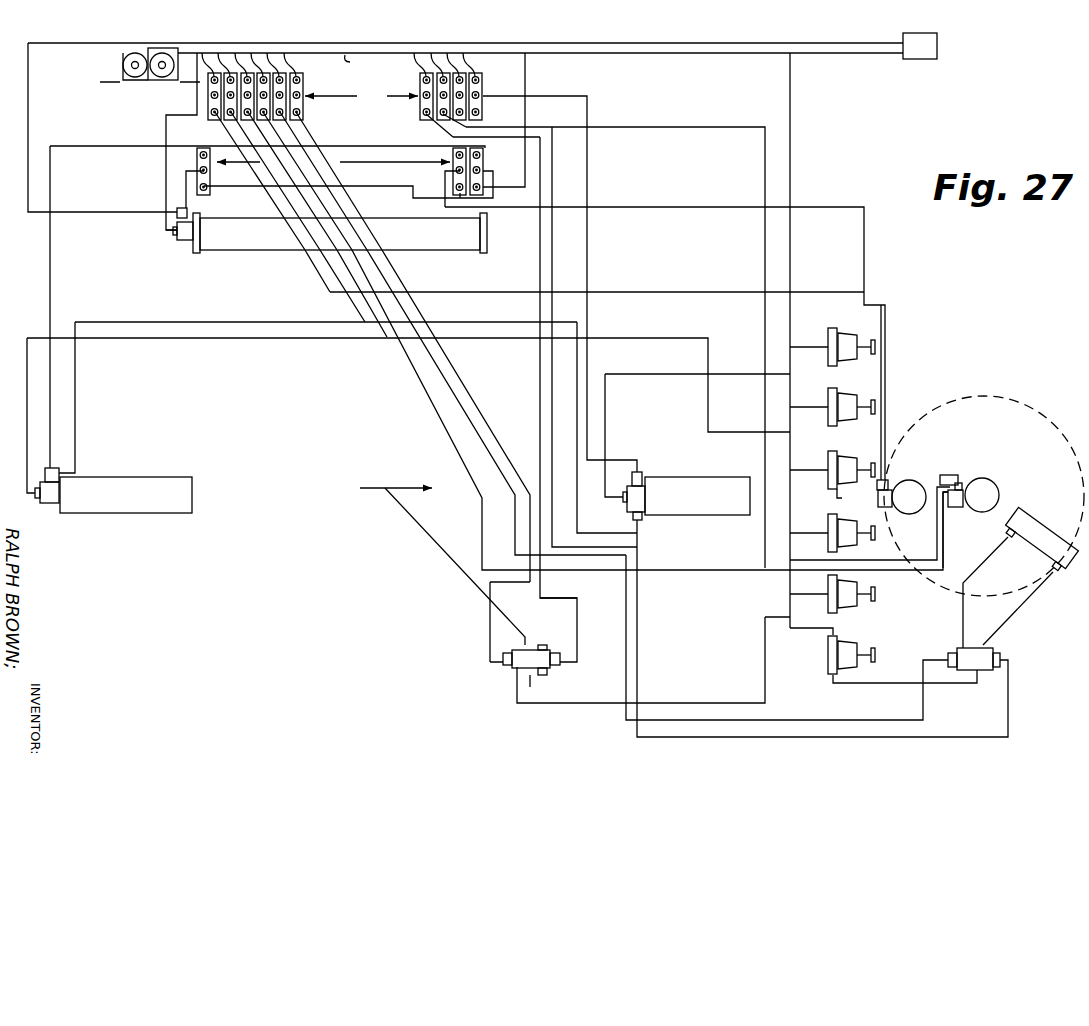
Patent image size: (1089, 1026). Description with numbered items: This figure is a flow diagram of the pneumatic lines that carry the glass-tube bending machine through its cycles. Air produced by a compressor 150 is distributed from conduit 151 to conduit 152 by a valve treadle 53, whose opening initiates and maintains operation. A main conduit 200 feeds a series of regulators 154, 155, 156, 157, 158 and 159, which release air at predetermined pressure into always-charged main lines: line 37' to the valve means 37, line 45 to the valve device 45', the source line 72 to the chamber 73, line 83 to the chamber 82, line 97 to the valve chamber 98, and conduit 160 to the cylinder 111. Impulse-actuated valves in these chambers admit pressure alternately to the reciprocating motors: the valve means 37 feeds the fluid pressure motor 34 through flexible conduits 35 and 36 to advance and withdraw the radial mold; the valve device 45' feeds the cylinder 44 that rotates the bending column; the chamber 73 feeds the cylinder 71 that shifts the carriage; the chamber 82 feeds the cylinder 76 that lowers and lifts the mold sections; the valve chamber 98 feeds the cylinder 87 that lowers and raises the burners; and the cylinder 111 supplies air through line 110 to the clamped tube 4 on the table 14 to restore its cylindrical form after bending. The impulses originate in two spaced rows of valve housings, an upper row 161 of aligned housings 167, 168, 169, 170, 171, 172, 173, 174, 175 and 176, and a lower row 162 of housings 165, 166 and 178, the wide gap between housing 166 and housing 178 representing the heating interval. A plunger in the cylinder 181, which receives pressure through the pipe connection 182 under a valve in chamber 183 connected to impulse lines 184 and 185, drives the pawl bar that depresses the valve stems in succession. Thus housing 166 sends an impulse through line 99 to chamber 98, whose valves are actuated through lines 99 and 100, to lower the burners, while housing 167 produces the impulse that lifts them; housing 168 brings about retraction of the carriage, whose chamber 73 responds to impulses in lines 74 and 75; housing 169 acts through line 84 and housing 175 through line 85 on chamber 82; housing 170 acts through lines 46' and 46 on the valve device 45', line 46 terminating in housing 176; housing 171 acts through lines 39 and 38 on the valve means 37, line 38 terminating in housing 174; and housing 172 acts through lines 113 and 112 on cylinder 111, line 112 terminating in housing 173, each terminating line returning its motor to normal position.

The tube 4 is at (372, 488).
The table 14 is at (978, 396).
The fluid pressure motor 34 is at (1040, 522).
The flexible conduit 35 is at (1020, 608).
The flexible conduit 36 is at (985, 568).
The valve means 37 is at (966, 650).
The line 37' is at (883, 667).
The line 38 is at (1008, 705).
The line 39 is at (923, 703).
The cylinder 44 is at (700, 482).
The line 45 is at (408, 417).
The valve device 45' is at (653, 497).
The line 46 is at (631, 477).
The line 46' is at (607, 427).
The valve treadle 53 is at (937, 48).
The fluid pressure cylinder 71 is at (135, 508).
The fluid pressure source line 72 is at (223, 338).
The chamber 73 is at (48, 505).
The line 74 is at (77, 417).
The line 75 is at (50, 305).
The cylinder 76 is at (990, 487).
The chamber 82 is at (955, 503).
The line 83 is at (948, 543).
The line 84 is at (422, 393).
The line 85 is at (643, 127).
The cylinder 87 is at (909, 482).
The line 97 is at (838, 498).
The valve chamber 98 is at (878, 505).
The line 99 is at (864, 232).
The line 100 is at (840, 280).
The line 110 is at (437, 546).
The cylinder 111 is at (520, 668).
The line 112 is at (577, 622).
The line 113 is at (500, 632).
The compressor 150 is at (165, 74).
The conduit 151 is at (847, 54).
The conduit 152 is at (787, 43).
The regulator 154 is at (843, 342).
The regulator 155 is at (845, 400).
The regulator 156 is at (845, 462).
The regulator 157 is at (850, 530).
The regulator 158 is at (850, 604).
The regulator 159 is at (852, 650).
The conduit 160 is at (680, 703).
The upper row of valve housings 161 is at (361, 97).
The lower row of valve housings 162 is at (333, 162).
The housing 165 is at (481, 172).
The housing 166 is at (457, 186).
The housing 167 is at (202, 53).
The housing 168 is at (225, 49).
The housing 169 is at (235, 53).
The housing 170 is at (265, 49).
The housing 171 is at (267, 53).
The housing 172 is at (284, 53).
The housing 173 is at (414, 53).
The housing 174 is at (442, 46).
The housing 175 is at (447, 53).
The housing 176 is at (480, 46).
The housing 178 is at (210, 176).
The cylinder 181 is at (257, 245).
The fluid pressure pipe connection 182 is at (166, 137).
The chamber 183 is at (190, 210).
The impulse-creating line 184 is at (186, 176).
The impulse-creating line 185 is at (97, 214).
The conduit 200 is at (366, 68).